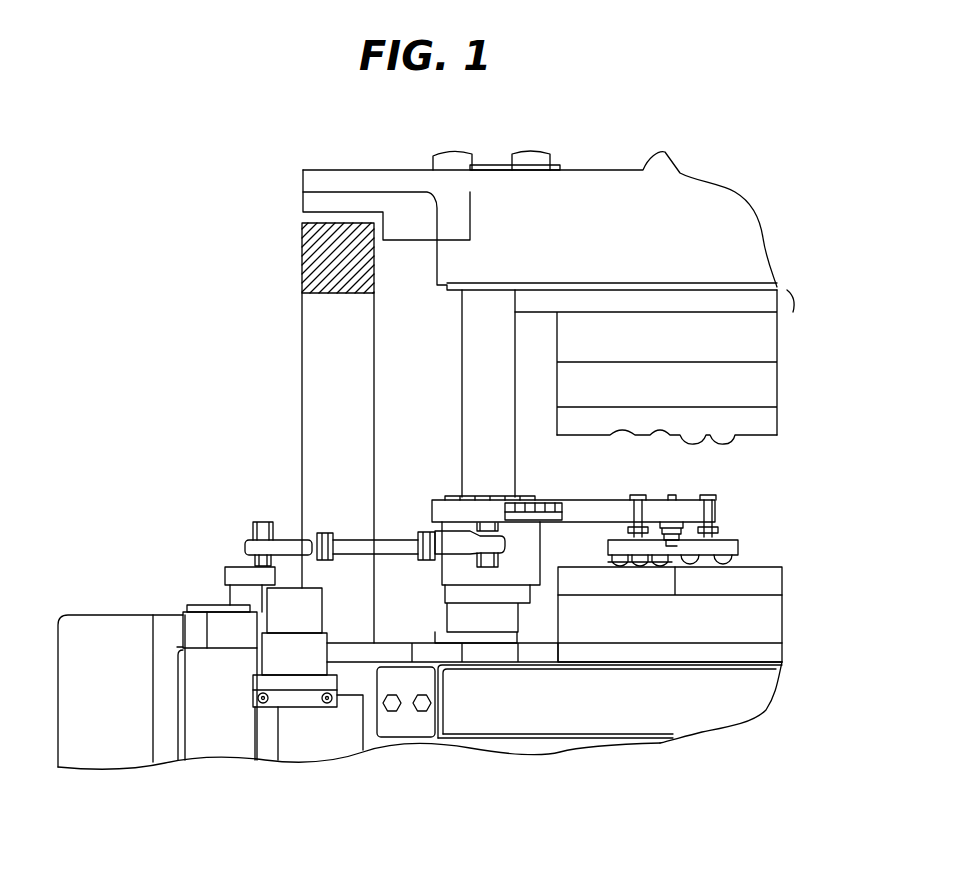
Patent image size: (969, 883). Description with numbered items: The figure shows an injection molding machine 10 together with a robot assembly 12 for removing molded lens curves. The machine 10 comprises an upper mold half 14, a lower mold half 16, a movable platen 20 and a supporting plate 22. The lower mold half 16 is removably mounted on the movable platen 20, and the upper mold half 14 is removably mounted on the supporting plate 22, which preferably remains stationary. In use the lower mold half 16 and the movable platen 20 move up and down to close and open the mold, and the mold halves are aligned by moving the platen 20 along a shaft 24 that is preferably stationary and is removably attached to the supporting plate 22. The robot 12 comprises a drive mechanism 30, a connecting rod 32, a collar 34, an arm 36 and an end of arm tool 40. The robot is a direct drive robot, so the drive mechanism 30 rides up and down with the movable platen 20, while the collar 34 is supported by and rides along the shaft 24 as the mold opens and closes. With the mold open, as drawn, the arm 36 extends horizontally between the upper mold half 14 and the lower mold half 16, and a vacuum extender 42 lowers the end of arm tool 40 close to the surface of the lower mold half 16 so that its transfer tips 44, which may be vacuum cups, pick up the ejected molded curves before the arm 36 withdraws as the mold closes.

The injection molding machine 10 is at (226, 297).
The robot assembly 12 is at (434, 495).
The upper mold half 14 is at (783, 290).
The lower mold half 16 is at (790, 567).
The movable platen 20 is at (717, 700).
The supporting plate 22 is at (573, 217).
The shaft 24 is at (480, 353).
The drive mechanism 30 is at (337, 782).
The connecting rod 32 is at (352, 540).
The collar 34 is at (487, 515).
The arm 36 is at (597, 513).
The end of arm tool 40 is at (735, 545).
The vacuum extender 42 is at (680, 537).
The transfer tips 44 is at (740, 560).